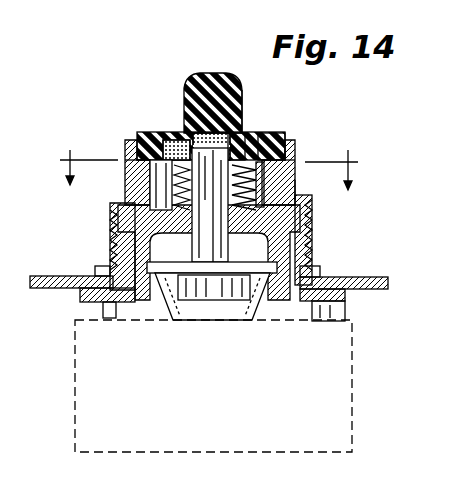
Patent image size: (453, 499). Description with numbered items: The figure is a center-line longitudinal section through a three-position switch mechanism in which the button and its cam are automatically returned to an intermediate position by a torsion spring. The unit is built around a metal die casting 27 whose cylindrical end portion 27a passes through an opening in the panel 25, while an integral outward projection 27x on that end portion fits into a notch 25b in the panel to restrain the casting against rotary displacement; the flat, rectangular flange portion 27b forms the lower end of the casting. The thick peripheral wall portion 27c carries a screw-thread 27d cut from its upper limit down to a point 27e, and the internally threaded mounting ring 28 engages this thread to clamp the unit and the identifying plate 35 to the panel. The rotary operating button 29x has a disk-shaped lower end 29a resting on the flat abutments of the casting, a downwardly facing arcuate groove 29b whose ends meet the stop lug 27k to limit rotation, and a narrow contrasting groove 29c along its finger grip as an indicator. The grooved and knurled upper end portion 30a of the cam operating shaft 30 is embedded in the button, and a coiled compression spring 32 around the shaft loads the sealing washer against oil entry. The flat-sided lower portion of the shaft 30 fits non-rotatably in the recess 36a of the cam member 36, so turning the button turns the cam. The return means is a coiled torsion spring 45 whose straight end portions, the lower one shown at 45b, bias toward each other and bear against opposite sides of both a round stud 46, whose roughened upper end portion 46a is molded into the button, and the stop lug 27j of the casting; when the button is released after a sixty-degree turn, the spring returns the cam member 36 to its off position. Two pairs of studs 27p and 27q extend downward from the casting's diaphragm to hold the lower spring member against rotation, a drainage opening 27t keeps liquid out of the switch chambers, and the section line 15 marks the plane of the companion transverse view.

The section line 15 is at (207, 155).
The panel 25 is at (385, 291).
The notch 25b is at (82, 297).
The die casting 27 is at (296, 162).
The cylindrical end portion 27a is at (294, 182).
The flange portion 27b is at (347, 311).
The peripheral wall portion 27c is at (112, 252).
The screw-thread 27d is at (312, 238).
The lower limit of thread 27e is at (318, 268).
The stop lug 27j is at (125, 160).
The stop lug 27k is at (300, 170).
The studs 27p is at (112, 236).
The studs 27q is at (312, 250).
The drainage opening 27t is at (312, 215).
The outward projection 27x is at (105, 268).
The mounting ring 28 is at (312, 227).
The lower end of operating button 29a is at (258, 137).
The arcuate groove 29b is at (272, 142).
The groove 29c is at (210, 74).
The rotary operating button 29x is at (242, 92).
The cam operating shaft 30 is at (210, 205).
The upper end portion of shaft 30a is at (240, 108).
The coiled compression spring 32 is at (246, 148).
The identifying plate 35 is at (330, 276).
The cam member 36 is at (165, 320).
The recess in cam member 36a is at (250, 322).
The coiled torsion spring 45 is at (307, 200).
The lower end portion of torsion spring 45b is at (112, 204).
The stud 46 is at (135, 168).
The upper end portion of stud 46a is at (165, 135).